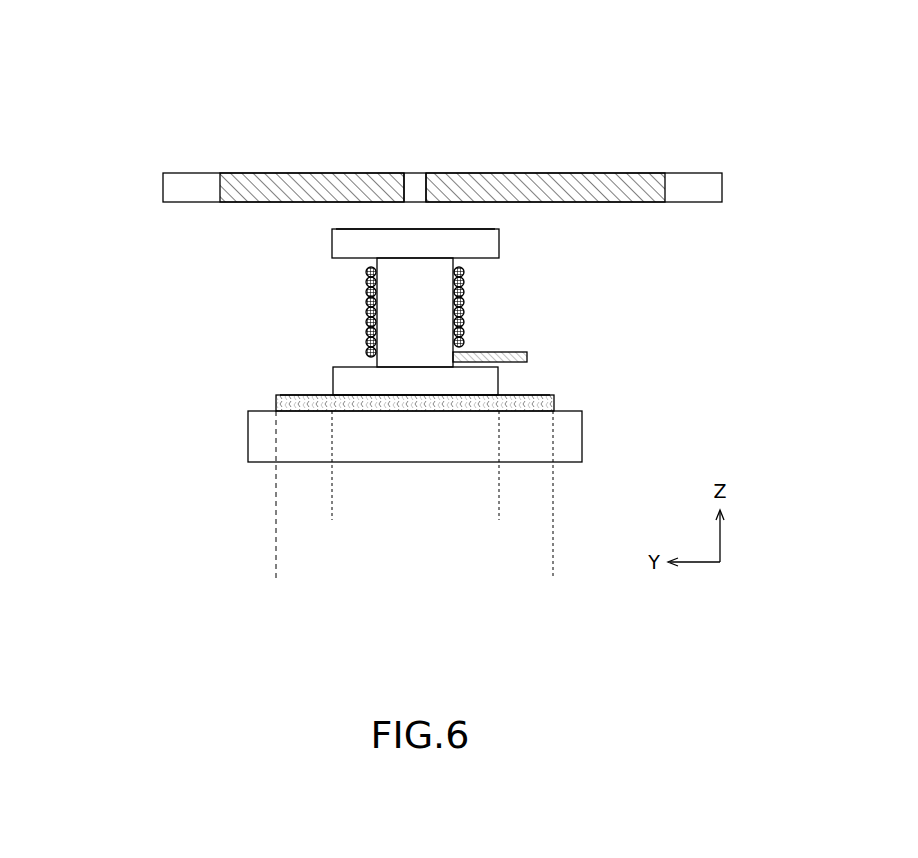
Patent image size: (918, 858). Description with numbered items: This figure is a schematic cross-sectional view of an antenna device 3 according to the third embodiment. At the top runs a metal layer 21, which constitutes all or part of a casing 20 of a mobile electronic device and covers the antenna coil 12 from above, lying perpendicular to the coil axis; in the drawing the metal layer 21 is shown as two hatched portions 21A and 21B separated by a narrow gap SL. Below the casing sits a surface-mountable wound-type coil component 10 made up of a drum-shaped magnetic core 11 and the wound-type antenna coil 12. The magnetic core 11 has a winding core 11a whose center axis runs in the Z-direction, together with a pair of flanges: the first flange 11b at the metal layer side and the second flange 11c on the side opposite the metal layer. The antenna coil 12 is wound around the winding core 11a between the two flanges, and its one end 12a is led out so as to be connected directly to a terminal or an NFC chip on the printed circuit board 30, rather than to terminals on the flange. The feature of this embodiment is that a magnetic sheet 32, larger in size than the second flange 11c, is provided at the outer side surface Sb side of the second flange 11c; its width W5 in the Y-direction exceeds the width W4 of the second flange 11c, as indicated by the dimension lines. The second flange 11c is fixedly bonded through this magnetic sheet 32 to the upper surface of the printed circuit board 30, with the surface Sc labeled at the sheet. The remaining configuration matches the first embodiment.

The antenna device 3 is at (545, 19).
The casing 20 is at (158, 190).
The metal layer 21 is at (442, 135).
The first magnetized region 21A is at (220, 144).
The second magnetized region 21B is at (426, 144).
The slit gap SL is at (413, 166).
The wound-type coil component 10 is at (425, 301).
The magnetic core 11 is at (401, 301).
The winding core 11a is at (400, 322).
The first flange 11b is at (332, 243).
The second flange 11c is at (337, 384).
The outer side surface Sb is at (358, 224).
The antenna coil 12 is at (478, 312).
The one end of the antenna coil 12a is at (525, 342).
The printed circuit board 30 is at (248, 434).
The magnetic sheet 32 is at (555, 405).
The surface of adhesive layer Sc is at (352, 402).
The width of the second flange W4 is at (491, 512).
The width of the magnetic sheet W5 is at (284, 568).